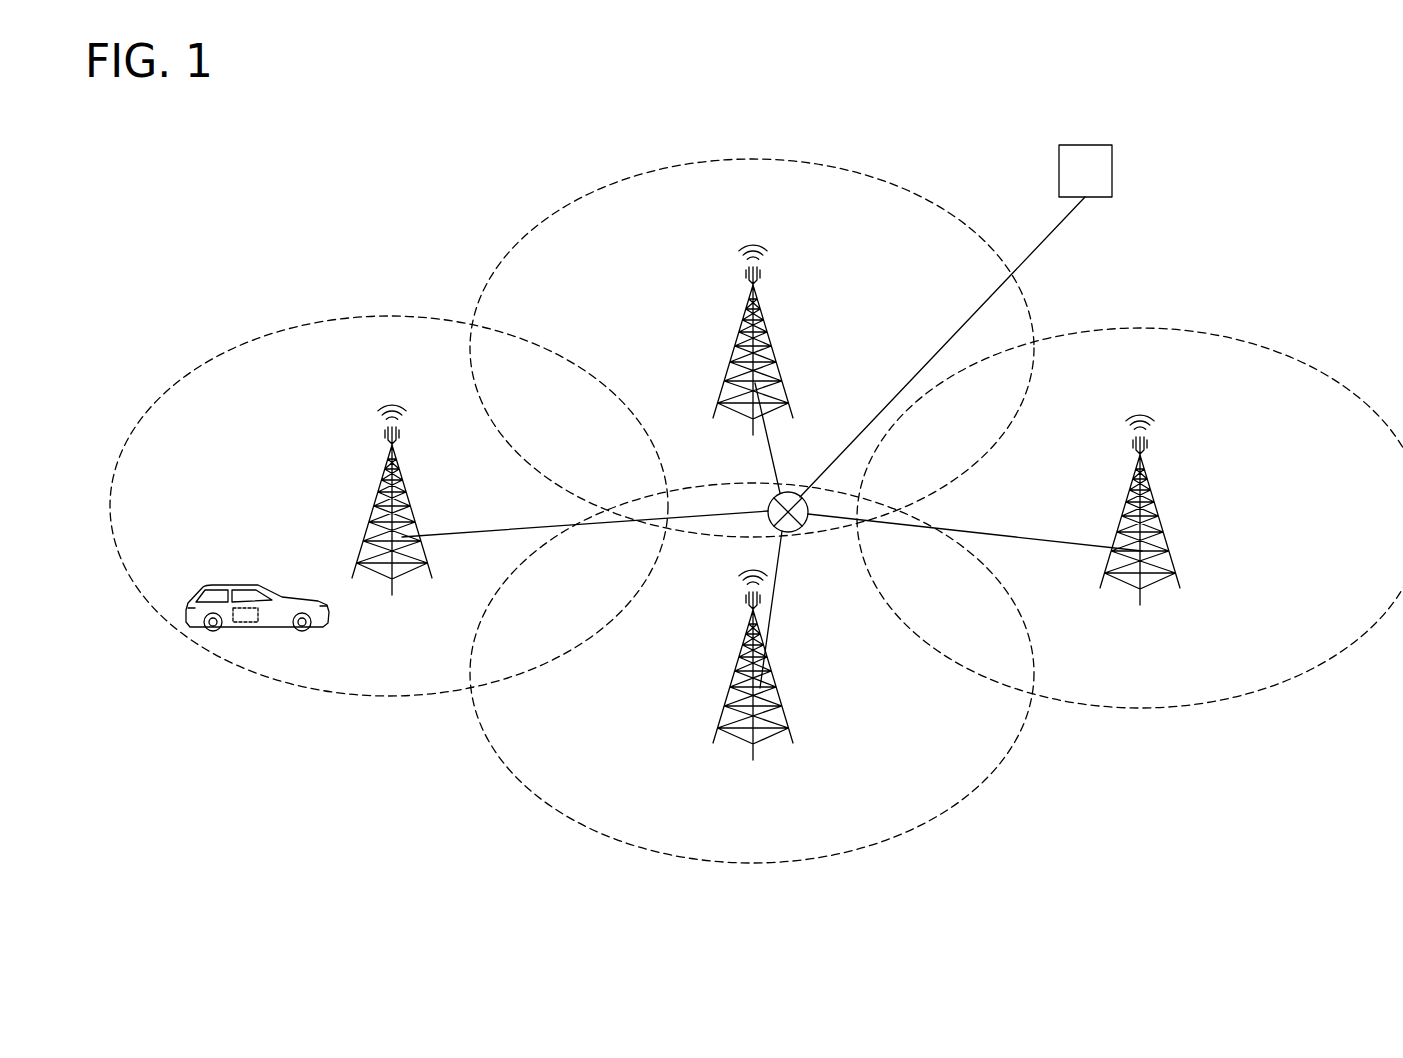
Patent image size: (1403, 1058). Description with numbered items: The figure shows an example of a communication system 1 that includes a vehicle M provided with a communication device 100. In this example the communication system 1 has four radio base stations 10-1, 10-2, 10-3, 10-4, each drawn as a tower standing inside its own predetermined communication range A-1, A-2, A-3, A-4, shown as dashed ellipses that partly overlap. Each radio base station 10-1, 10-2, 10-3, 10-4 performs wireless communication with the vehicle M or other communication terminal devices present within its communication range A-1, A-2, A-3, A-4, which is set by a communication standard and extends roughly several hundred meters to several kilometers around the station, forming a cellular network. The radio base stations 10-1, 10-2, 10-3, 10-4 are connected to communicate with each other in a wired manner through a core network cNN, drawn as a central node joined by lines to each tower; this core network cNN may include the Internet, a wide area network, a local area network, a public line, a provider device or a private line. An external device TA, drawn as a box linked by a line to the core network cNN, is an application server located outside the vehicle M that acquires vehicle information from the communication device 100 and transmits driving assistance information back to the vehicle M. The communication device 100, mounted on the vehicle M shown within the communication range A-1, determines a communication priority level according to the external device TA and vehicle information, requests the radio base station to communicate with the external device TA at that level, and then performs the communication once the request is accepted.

The communication system 1 is at (1313, 127).
The communication range A-1 is at (380, 316).
The communication range A-2 is at (745, 158).
The communication range A-3 is at (750, 864).
The communication range A-4 is at (1133, 328).
The radio base station 10-1 is at (372, 493).
The radio base station 10-2 is at (736, 333).
The radio base station 10-3 is at (738, 659).
The radio base station 10-4 is at (1122, 503).
The core network cNN is at (800, 530).
The external device TA is at (1085, 144).
The vehicle M is at (238, 584).
The communication device 100 is at (250, 624).